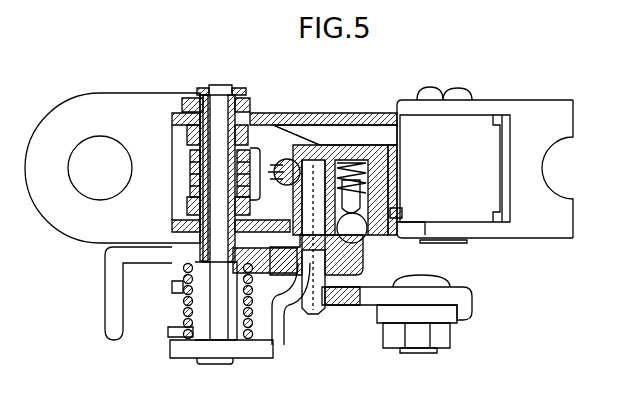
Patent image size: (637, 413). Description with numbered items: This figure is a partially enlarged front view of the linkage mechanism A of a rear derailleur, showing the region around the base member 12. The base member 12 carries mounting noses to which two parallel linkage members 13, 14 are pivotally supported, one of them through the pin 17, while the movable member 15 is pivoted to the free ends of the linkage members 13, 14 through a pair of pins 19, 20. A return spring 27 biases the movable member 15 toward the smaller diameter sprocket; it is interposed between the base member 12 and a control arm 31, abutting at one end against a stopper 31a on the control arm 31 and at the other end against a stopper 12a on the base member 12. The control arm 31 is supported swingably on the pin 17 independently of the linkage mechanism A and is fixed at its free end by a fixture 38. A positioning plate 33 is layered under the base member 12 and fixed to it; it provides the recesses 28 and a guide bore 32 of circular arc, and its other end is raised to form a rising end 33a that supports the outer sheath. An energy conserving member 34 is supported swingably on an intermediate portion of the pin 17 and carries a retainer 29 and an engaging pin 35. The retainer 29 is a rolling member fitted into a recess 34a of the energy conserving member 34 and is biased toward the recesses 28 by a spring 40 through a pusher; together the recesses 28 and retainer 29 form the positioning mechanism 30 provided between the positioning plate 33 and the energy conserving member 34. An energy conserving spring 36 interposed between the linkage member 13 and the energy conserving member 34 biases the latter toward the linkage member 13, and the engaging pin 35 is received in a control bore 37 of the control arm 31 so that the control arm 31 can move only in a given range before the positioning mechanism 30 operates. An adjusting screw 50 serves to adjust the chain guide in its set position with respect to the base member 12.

The base member 12 is at (63, 239).
The stopper 12a is at (176, 286).
The linkage member 13 is at (363, 113).
The linkage member 14 is at (326, 112).
The movable member 15 is at (527, 238).
The pin 17 is at (222, 343).
The pin 19 is at (462, 89).
The pin 20 is at (432, 87).
The return spring 27 is at (183, 305).
The recesses 28 is at (368, 240).
The retainer 29 is at (378, 230).
The positioning mechanism 30 is at (414, 246).
The control arm 31 is at (263, 352).
The stopper 31a is at (168, 336).
The guide bore 32 is at (283, 332).
The positioning plate 33 is at (357, 306).
The rising end 33a is at (112, 320).
The energy conserving member 34 is at (287, 112).
The recess 34a is at (413, 203).
The engaging pin 35 is at (313, 318).
The energy conserving spring 36 is at (263, 97).
The control bore 37 is at (329, 306).
The fixture 38 is at (420, 349).
The spring 40 is at (340, 181).
The adjusting screw 50 is at (291, 160).
The linkage mechanism A is at (391, 112).